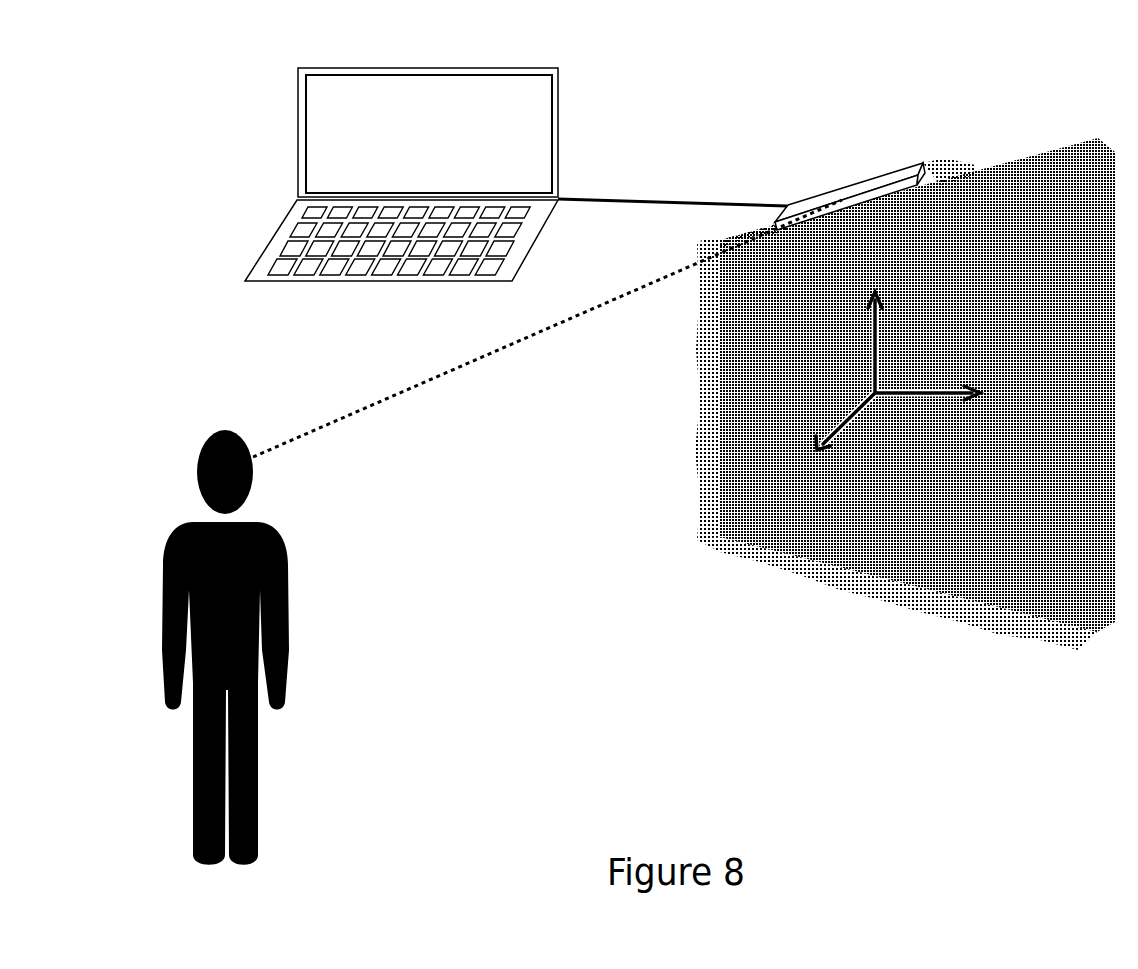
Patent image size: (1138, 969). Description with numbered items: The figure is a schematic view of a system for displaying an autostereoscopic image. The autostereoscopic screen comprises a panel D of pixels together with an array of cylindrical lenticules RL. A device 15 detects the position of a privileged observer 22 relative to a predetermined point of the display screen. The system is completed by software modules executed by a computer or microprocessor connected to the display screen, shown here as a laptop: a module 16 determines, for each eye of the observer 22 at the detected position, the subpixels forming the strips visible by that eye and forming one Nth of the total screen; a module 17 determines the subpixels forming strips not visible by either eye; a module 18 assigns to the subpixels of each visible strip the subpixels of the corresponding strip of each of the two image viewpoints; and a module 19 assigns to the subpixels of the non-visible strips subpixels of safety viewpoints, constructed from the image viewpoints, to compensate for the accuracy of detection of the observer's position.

The device for detecting the position of a privileged observer 15 is at (845, 197).
The module for determination of visible subpixels 16 is at (287, 212).
The module for determination of non-visible subpixels 17 is at (287, 175).
The module for assignment to visible strips 18 is at (287, 133).
The module for assignment to non-visible strips 19 is at (287, 92).
The privileged observer 22 is at (160, 627).
The panel of pixels D is at (1077, 213).
The array of cylindrical lenticules RL is at (1037, 585).